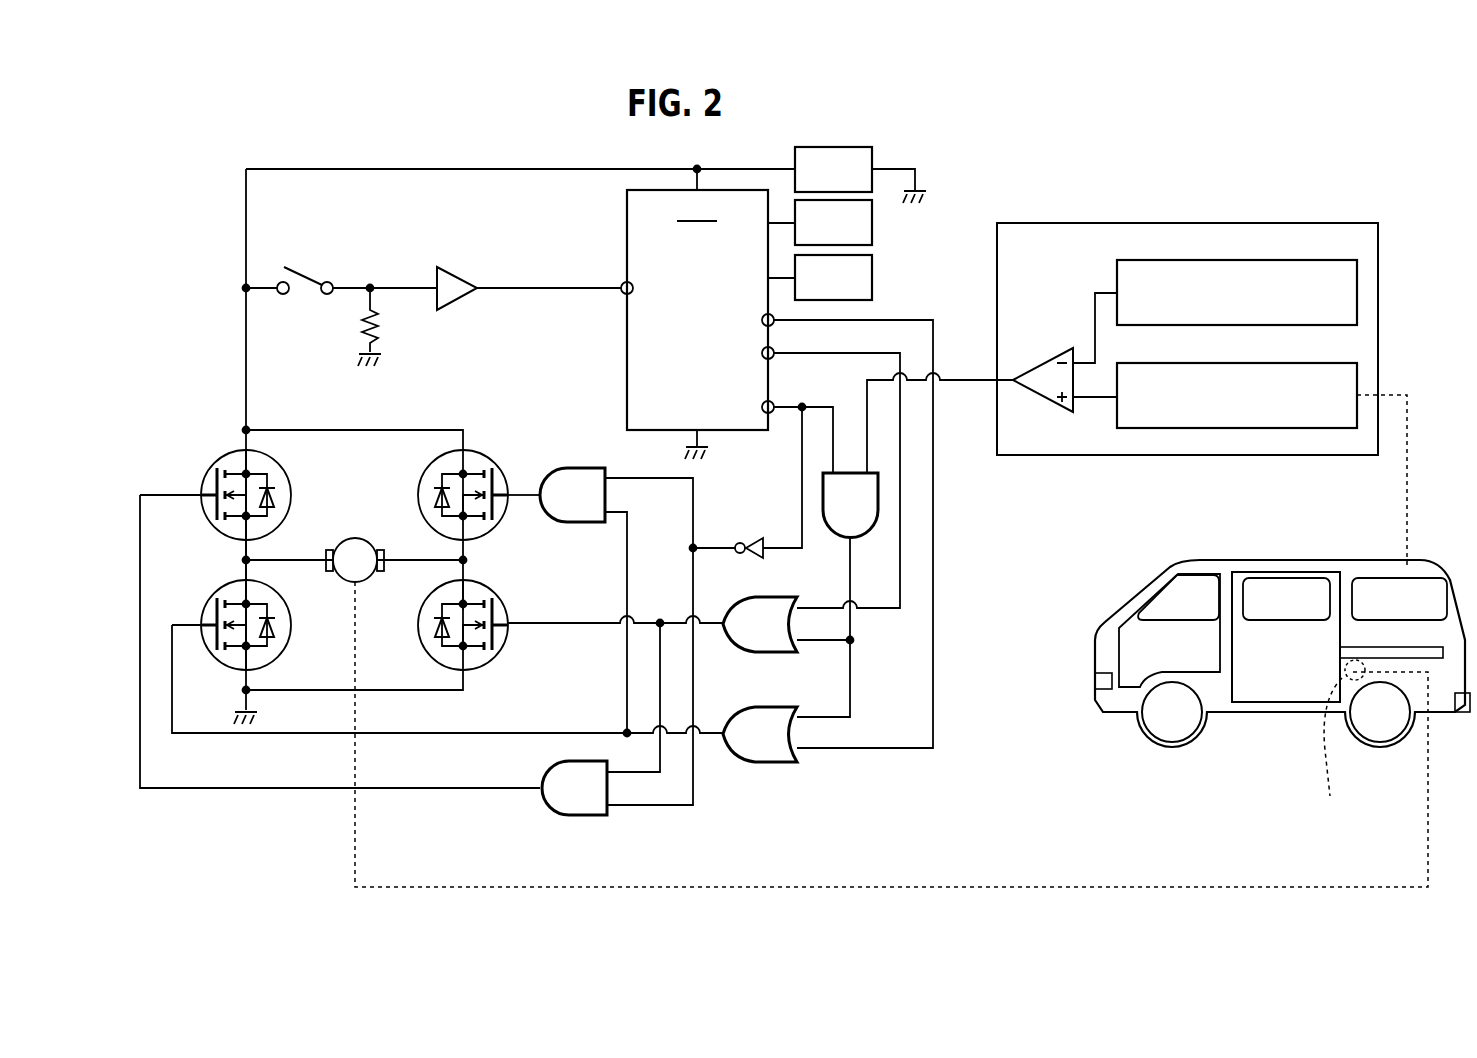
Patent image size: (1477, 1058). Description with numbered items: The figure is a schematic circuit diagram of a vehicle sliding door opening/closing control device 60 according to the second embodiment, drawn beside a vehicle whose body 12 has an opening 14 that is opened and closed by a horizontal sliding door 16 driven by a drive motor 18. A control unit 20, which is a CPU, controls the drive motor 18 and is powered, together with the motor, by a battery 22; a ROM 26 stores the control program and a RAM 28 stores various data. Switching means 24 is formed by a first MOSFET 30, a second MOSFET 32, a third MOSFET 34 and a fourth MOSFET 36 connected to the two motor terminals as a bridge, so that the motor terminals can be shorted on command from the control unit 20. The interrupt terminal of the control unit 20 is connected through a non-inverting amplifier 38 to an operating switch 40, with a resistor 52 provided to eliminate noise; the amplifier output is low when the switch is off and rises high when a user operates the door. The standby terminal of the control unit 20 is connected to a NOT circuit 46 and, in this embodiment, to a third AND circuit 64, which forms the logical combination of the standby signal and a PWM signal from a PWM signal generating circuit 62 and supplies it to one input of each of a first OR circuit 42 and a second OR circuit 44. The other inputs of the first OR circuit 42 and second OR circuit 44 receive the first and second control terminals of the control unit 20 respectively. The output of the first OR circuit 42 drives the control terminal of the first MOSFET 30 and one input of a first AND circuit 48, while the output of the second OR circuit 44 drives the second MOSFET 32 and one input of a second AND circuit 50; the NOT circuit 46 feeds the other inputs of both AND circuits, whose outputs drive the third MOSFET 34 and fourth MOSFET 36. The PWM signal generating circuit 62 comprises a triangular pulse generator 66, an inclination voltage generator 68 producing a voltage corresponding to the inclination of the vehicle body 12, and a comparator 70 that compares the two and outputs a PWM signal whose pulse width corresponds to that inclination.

The vehicle body 12 is at (1290, 567).
The opening 14 is at (1253, 695).
The sliding door 16 is at (1287, 667).
The drive motor 18 is at (356, 540).
The control unit 20 is at (627, 224).
The battery 22 is at (850, 147).
The switching means 24 is at (208, 447).
The ROM 26 is at (873, 278).
The RAM 28 is at (873, 223).
The first MOSFET 30 is at (230, 590).
The second MOSFET 32 is at (502, 656).
The third MOSFET 34 is at (492, 460).
The fourth MOSFET 36 is at (273, 458).
The non-inverting amplifier 38 is at (455, 275).
The operating switch 40 is at (303, 273).
The first OR circuit 42 is at (770, 763).
The second OR circuit 44 is at (770, 653).
The NOT circuit 46 is at (744, 541).
The first AND circuit 48 is at (570, 467).
The second AND circuit 50 is at (568, 818).
The resistor 52 is at (358, 325).
The opening/closing control device 60 is at (528, 142).
The PWM signal generating circuit 62 is at (1160, 223).
The third AND circuit 64 is at (879, 493).
The triangular pulse generator 66 is at (1270, 260).
The inclination voltage generator 68 is at (1270, 363).
The comparator 70 is at (1030, 368).